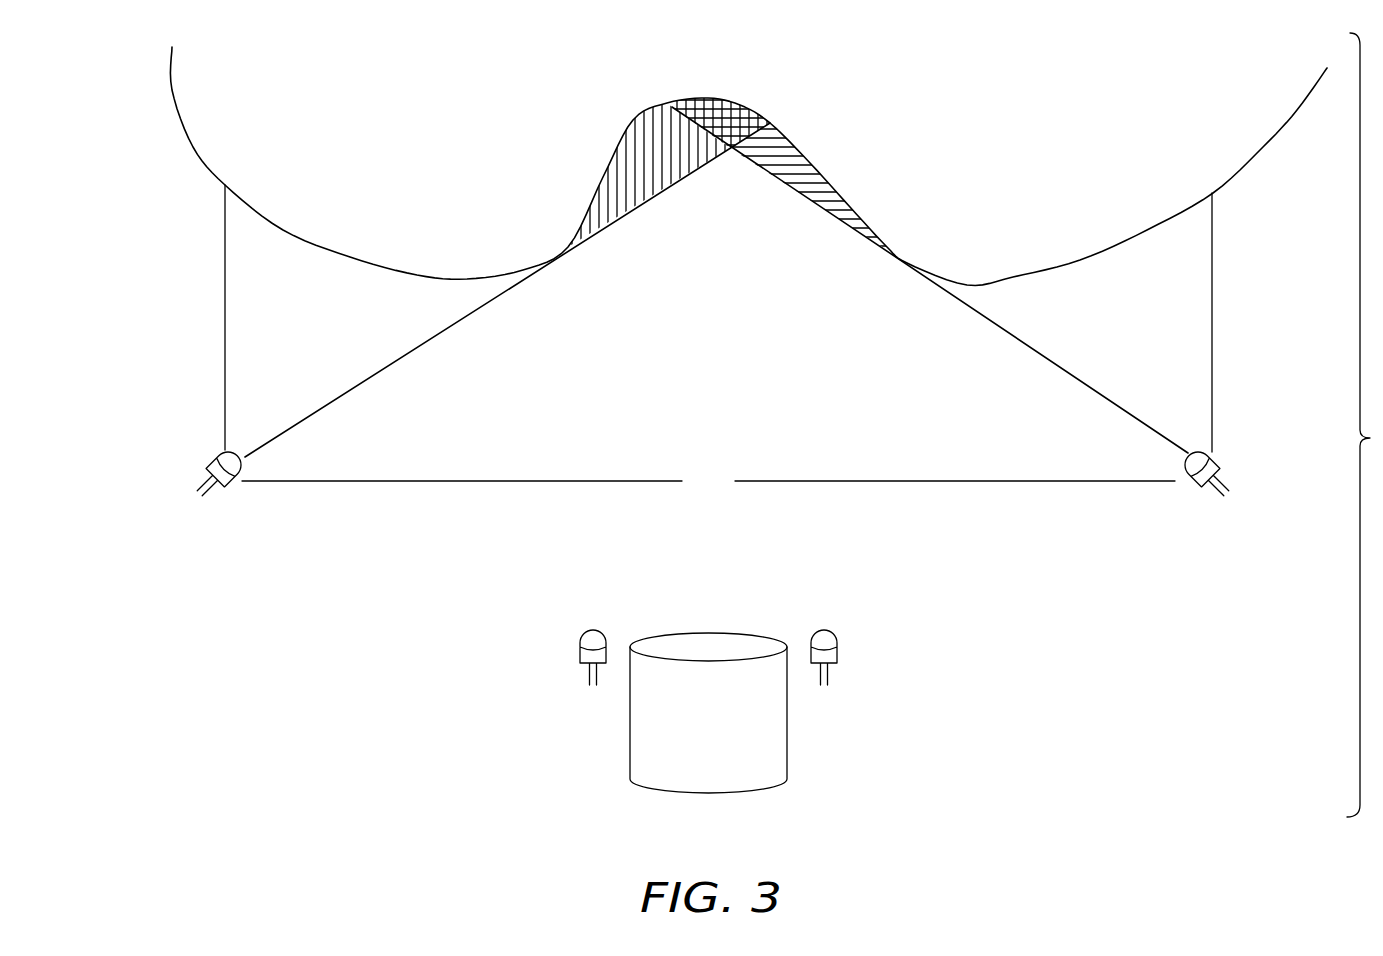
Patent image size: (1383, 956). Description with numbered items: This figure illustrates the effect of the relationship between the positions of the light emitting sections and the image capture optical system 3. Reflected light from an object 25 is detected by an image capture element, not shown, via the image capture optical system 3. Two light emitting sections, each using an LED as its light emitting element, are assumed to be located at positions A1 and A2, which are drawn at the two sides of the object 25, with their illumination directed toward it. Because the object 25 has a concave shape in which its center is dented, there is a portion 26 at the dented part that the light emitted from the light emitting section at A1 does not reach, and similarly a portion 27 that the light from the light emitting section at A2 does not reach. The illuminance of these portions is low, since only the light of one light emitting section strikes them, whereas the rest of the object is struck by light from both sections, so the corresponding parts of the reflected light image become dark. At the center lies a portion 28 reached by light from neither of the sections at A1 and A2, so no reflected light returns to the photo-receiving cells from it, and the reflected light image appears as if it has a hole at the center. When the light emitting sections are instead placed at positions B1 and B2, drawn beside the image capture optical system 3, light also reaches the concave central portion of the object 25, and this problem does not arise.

The object 25 is at (748, 166).
The portion 26 is at (603, 177).
The portion 27 is at (834, 178).
The portion 28 is at (727, 99).
The light emitting section position A1 is at (223, 502).
The light emitting section position A2 is at (1210, 505).
The light emitting section position B1 is at (567, 690).
The light emitting section position B2 is at (837, 690).
The image capture optical system 3 is at (703, 795).